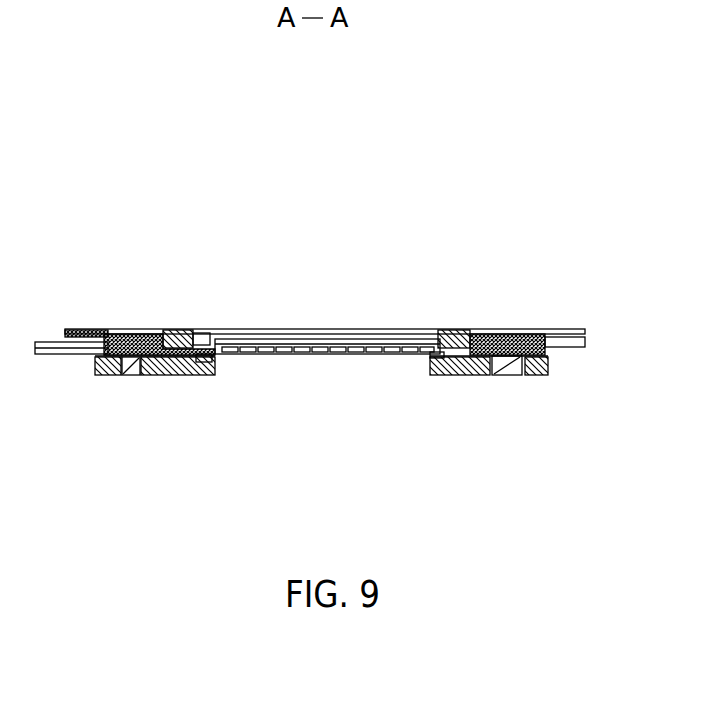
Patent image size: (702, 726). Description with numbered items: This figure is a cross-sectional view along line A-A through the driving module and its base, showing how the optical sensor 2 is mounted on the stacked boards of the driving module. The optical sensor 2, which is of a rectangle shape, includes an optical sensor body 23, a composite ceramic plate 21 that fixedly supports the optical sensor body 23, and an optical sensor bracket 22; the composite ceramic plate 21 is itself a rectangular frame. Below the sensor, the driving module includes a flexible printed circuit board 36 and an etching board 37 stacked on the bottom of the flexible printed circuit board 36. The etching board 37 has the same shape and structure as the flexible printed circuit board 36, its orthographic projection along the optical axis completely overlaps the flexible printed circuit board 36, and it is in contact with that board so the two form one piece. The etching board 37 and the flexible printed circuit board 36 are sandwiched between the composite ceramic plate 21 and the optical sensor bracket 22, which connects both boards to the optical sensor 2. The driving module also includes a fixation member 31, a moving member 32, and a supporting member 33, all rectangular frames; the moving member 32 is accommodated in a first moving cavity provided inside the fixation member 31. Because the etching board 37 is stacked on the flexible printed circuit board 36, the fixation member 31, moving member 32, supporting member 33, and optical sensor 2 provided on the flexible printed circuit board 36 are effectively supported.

The optical sensor 2 is at (463, 186).
The composite ceramic plate 21 is at (470, 330).
The optical sensor bracket 22 is at (193, 346).
The optical sensor body 23 is at (303, 350).
The fixation member 31 is at (100, 377).
The moving member 32 is at (133, 377).
The supporting member 33 is at (193, 377).
The flexible printed circuit board 36 is at (523, 355).
The etching board 37 is at (538, 333).